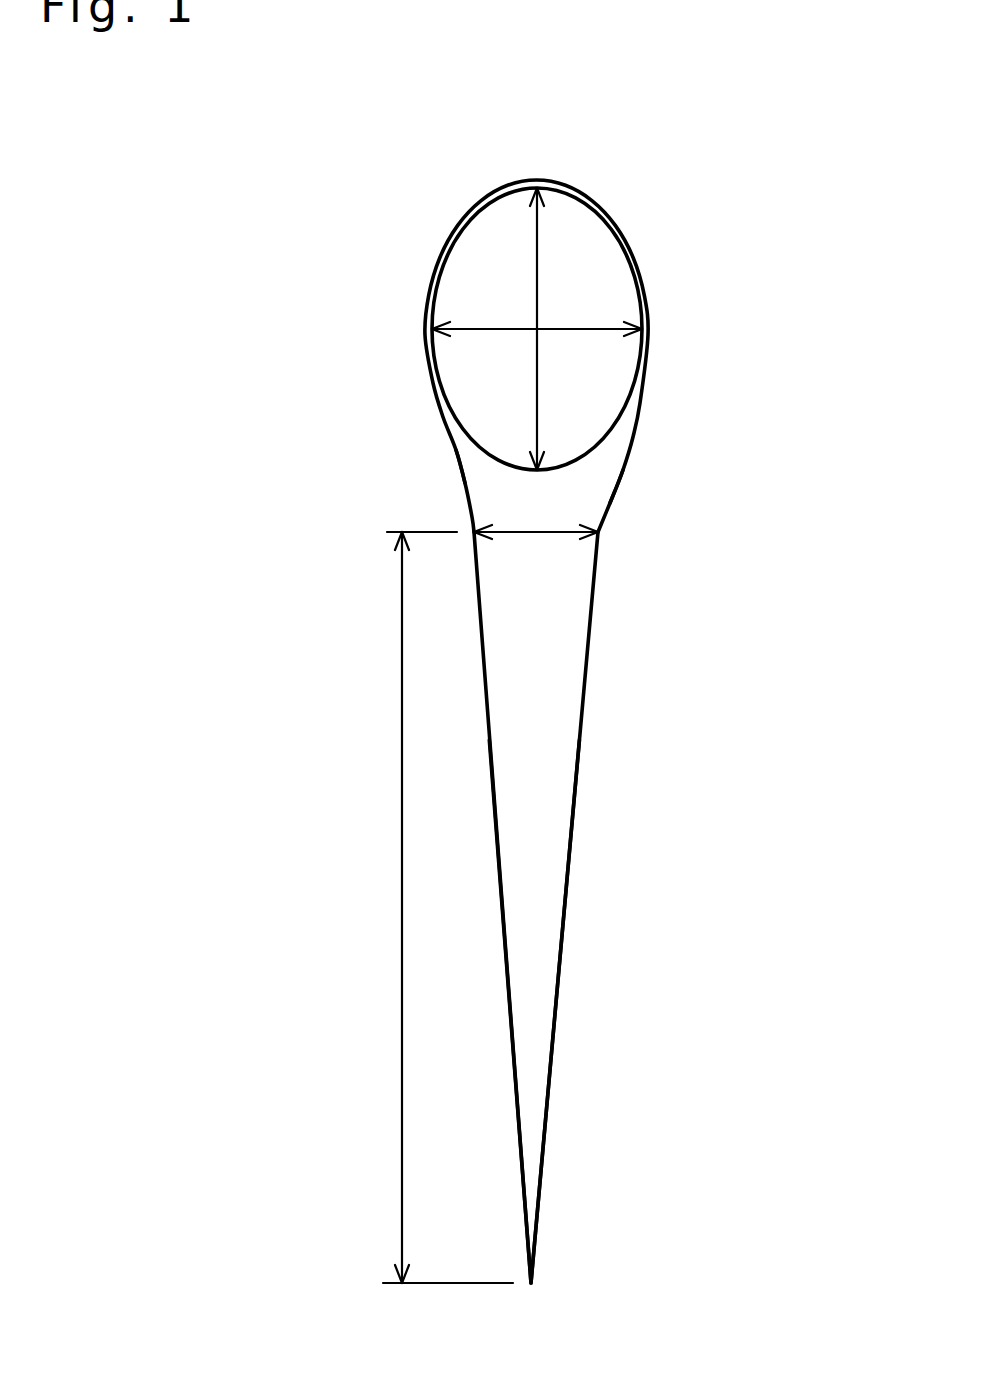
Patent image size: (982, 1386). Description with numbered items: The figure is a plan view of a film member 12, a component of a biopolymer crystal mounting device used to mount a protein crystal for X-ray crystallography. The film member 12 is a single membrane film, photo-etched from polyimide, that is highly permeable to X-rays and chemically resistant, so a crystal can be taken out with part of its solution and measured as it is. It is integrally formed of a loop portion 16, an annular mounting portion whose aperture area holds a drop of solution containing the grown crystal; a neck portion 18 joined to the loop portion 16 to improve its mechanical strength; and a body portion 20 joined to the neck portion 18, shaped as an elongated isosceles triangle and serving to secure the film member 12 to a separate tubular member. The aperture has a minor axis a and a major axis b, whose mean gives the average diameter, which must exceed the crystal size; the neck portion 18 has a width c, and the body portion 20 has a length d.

The film member 12 is at (390, 368).
The loop portion 16 is at (645, 333).
The neck portion 18 is at (578, 497).
The body portion 20 is at (547, 782).
The minor axis dimension of aperture area a is at (493, 329).
The major axis dimension of aperture area b is at (537, 278).
The width of neck portion c is at (537, 535).
The length of body portion d is at (400, 828).